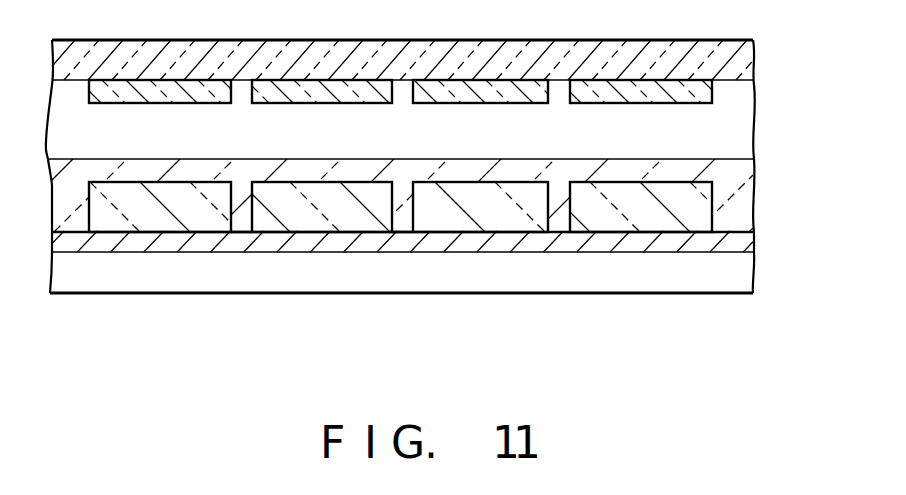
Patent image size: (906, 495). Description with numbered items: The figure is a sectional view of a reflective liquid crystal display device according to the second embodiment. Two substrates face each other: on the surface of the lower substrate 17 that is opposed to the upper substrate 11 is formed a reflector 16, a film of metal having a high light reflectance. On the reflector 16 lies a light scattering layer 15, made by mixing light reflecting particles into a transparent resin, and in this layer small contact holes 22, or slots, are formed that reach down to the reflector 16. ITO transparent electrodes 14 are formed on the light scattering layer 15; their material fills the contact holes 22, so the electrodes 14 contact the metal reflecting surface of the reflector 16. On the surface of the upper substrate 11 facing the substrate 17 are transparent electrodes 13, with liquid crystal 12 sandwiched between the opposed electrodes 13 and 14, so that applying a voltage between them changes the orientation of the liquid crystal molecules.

The substrate 11 is at (755, 62).
The gap / intermediate layer 12 is at (737, 133).
The transparent electrodes 13 is at (712, 92).
The ITO transparent electrodes 14 is at (740, 169).
The light scattering layer 15 is at (712, 203).
The reflector 16 is at (752, 240).
The substrate 17 is at (752, 277).
The contact holes 22 is at (245, 226).